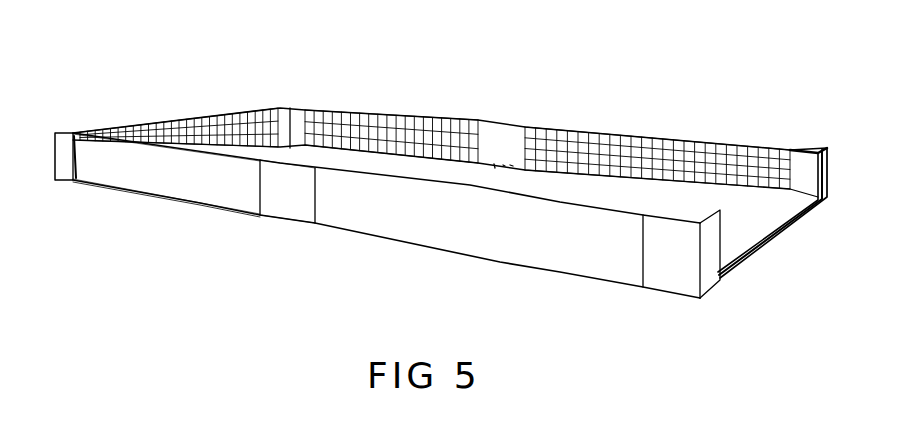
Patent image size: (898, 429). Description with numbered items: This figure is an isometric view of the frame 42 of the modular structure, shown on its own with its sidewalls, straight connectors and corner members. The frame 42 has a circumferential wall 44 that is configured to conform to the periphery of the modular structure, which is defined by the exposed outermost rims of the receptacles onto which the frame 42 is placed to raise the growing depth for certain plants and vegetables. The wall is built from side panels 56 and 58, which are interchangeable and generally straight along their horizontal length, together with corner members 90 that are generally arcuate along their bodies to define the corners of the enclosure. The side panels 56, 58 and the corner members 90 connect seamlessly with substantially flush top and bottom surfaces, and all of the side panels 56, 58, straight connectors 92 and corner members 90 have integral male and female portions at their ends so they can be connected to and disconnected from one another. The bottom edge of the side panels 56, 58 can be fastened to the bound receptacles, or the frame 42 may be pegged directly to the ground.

The frame 42 is at (593, 292).
The circumferential wall 44 is at (192, 202).
The side panel 56 is at (375, 112).
The side panel 58 is at (177, 122).
The corner member 90 is at (62, 167).
The straight connector 92 is at (288, 203).